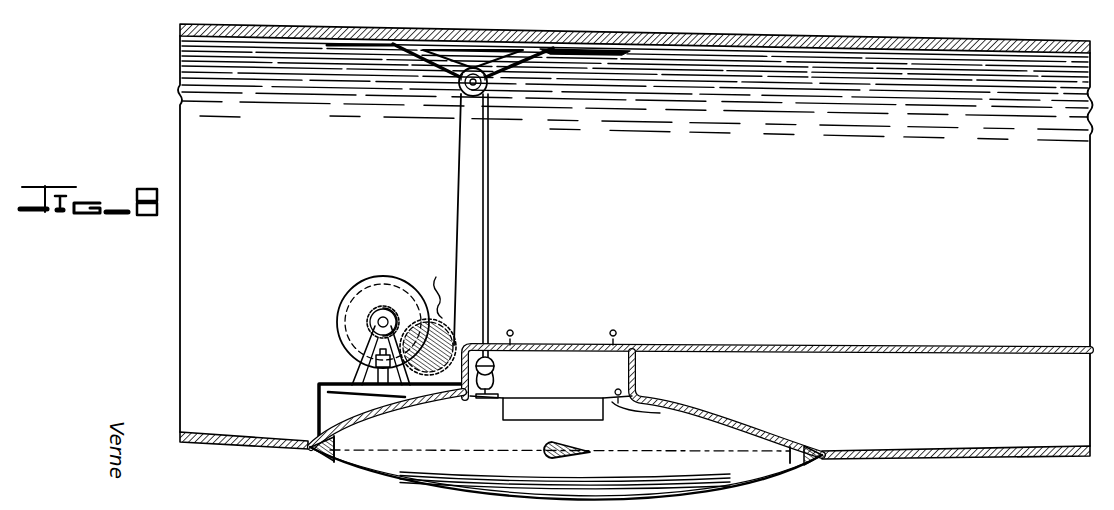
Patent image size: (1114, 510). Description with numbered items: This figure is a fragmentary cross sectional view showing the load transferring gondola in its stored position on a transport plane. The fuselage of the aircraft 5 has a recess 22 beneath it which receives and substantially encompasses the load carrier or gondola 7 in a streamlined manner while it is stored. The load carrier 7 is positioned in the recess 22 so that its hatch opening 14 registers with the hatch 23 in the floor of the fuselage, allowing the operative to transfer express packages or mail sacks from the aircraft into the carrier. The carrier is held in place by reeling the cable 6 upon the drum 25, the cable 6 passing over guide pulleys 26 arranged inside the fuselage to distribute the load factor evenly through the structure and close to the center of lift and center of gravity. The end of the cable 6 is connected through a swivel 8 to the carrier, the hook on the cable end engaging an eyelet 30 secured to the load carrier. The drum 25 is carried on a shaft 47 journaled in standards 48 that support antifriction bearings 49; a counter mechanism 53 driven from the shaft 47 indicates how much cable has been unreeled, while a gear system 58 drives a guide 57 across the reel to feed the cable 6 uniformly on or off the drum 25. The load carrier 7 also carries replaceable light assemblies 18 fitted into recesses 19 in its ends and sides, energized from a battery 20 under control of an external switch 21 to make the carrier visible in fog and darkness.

The fuselage of the aircraft 5 is at (1072, 253).
The cable 6 is at (459, 217).
The load carrier or gondola 7 is at (776, 438).
The swivel 8 is at (493, 357).
The hatch opening 14 is at (610, 404).
The light assemblies 18 is at (318, 448).
The recesses 19 is at (337, 457).
The battery 20 is at (538, 457).
The switch 21 is at (704, 436).
The recess 22 is at (770, 445).
The hatch 23 is at (580, 345).
The drum 25 is at (367, 292).
The guide pulleys 26 is at (487, 89).
The eyelet 30 is at (484, 395).
The shaft 47 is at (362, 332).
The standards 48 is at (318, 383).
The antifriction bearings 49 is at (367, 314).
The counter mechanism 53 is at (352, 364).
The guide 57 is at (429, 286).
The gear system 58 is at (403, 302).